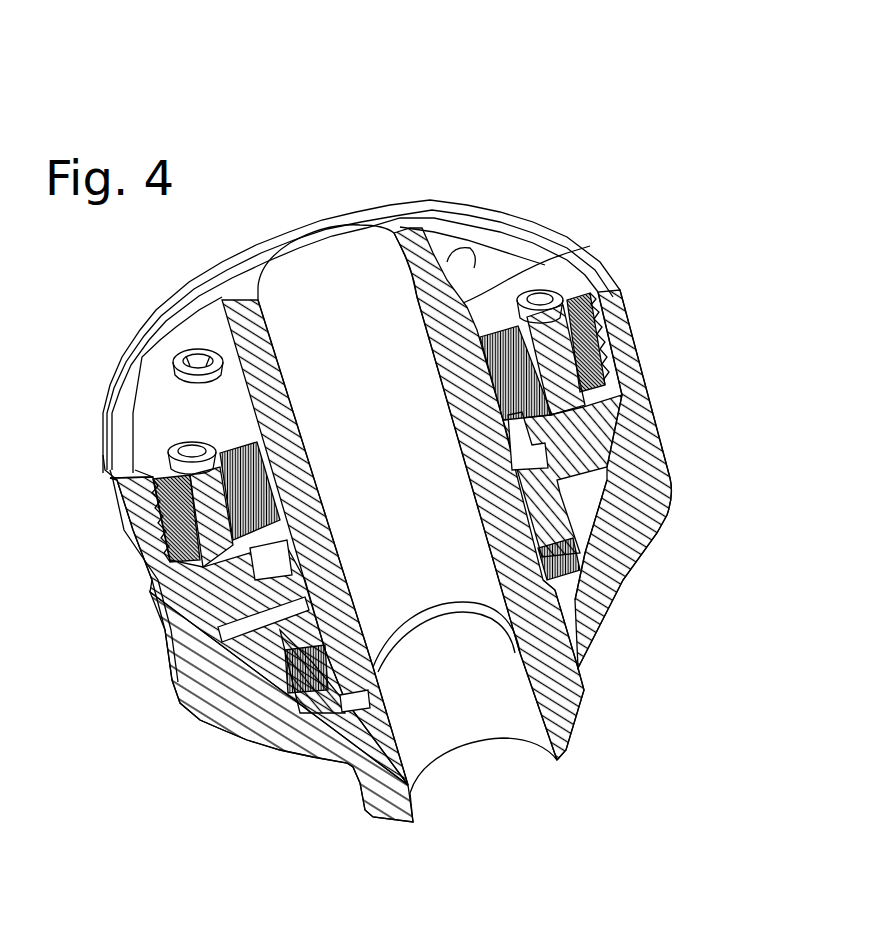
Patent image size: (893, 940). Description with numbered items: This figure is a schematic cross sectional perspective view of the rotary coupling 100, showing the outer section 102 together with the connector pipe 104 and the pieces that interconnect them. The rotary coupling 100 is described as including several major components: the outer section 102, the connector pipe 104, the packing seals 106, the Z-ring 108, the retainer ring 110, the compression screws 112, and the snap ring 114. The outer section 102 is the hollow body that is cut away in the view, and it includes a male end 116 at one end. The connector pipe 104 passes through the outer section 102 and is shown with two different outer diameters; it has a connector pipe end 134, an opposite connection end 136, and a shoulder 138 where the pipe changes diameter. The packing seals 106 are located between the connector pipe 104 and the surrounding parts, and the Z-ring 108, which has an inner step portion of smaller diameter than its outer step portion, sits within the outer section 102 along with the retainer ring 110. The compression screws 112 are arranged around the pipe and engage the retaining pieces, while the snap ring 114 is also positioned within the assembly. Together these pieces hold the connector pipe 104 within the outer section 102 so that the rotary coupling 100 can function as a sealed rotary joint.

The rotary coupling 100 is at (625, 100).
The outer section 102 is at (643, 497).
The connector pipe 104 is at (510, 297).
The packing seals 106 is at (581, 557).
The Z-ring 108 is at (600, 447).
The retainer ring 110 is at (597, 337).
The compression screws 112 is at (580, 290).
The snap ring 114 is at (560, 278).
The male end 116 is at (577, 740).
The connector pipe end 134 is at (580, 603).
The connection end 136 is at (445, 263).
The shoulder 138 is at (280, 552).